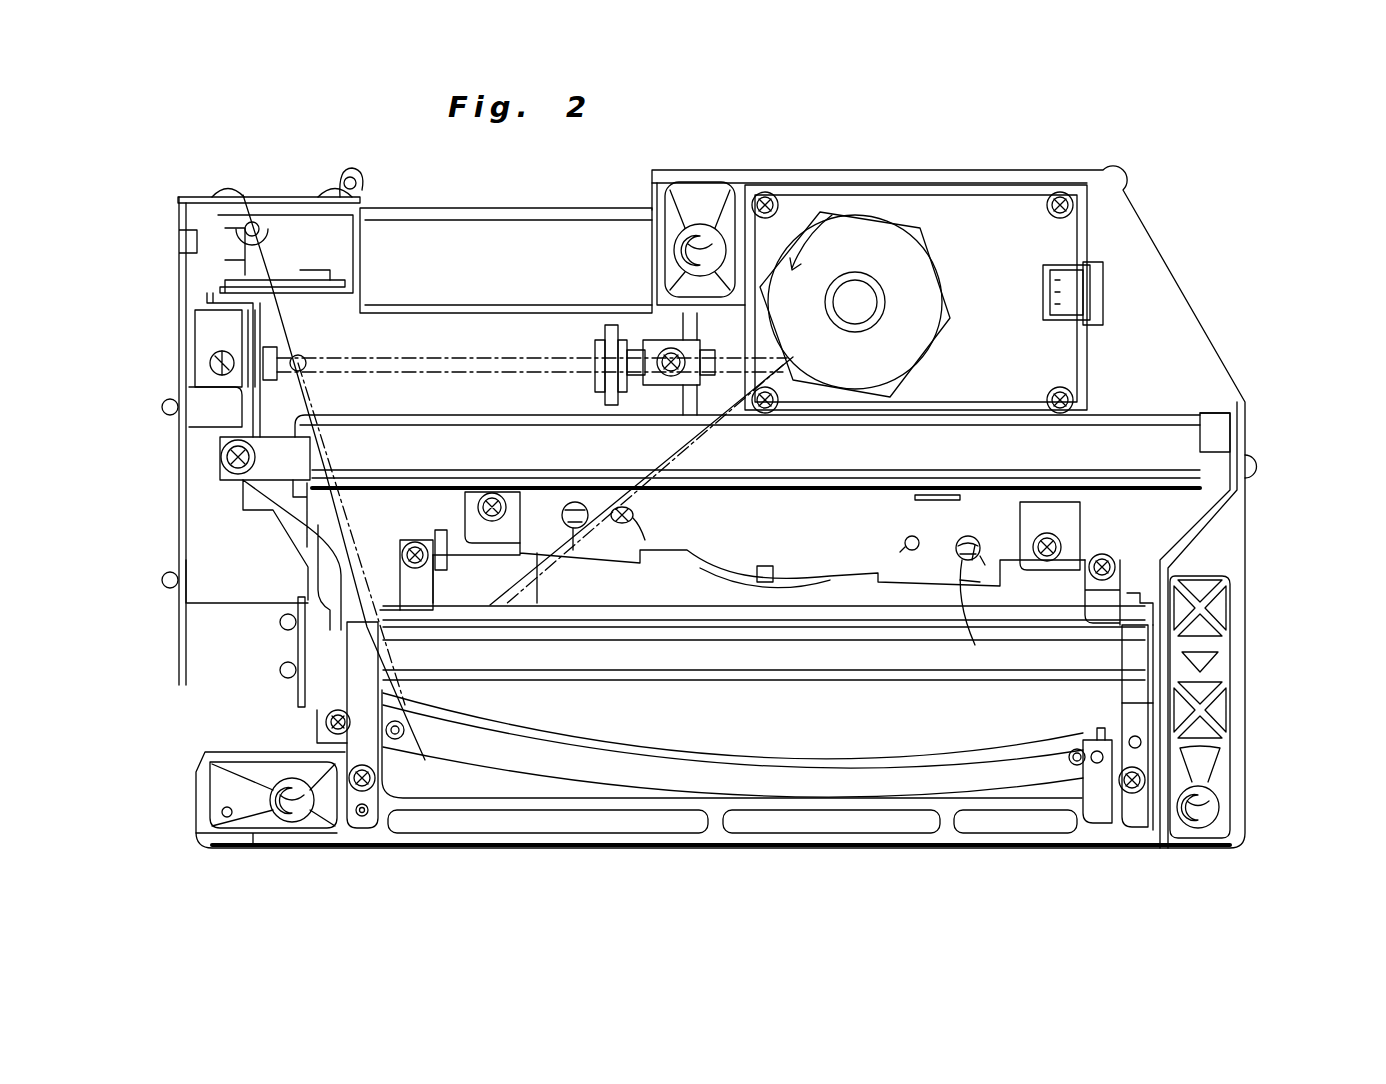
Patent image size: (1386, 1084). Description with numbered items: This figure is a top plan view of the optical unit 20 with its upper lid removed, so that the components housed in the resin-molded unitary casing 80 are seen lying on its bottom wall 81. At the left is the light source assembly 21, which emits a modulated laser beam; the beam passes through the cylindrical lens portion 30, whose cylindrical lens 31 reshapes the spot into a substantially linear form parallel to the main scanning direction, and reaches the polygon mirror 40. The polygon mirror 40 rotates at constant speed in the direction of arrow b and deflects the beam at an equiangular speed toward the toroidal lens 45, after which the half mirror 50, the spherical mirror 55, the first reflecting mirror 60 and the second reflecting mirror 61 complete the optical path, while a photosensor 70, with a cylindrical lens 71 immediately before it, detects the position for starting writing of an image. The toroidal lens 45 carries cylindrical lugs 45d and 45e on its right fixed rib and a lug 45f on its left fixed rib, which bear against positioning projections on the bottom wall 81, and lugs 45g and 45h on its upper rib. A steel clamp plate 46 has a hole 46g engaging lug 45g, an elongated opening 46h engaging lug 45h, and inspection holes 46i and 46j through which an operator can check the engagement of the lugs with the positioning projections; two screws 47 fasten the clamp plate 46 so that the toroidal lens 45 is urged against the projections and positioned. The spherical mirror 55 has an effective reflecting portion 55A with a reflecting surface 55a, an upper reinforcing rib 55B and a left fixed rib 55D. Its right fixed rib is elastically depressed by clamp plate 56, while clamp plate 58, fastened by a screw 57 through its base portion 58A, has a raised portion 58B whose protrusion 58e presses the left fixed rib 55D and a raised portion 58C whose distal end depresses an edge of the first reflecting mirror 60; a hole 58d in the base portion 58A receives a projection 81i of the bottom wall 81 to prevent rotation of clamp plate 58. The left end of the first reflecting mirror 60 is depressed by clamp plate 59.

The optical unit 20 is at (607, 850).
The light source assembly 21 is at (215, 352).
The cylindrical lens portion 30 is at (627, 320).
The cylindrical lens 31 is at (596, 345).
The polygon mirror 40 is at (827, 218).
The toroidal lens 45 is at (820, 580).
The cylindrical lug 45d is at (978, 540).
The cylindrical lug 45e is at (958, 545).
The cylindrical lug 45f is at (562, 520).
The cylindrical lug 45g is at (905, 540).
The cylindrical lug 45h is at (637, 512).
The clamp plate 46 is at (770, 515).
The hole 46g is at (905, 548).
The elongated opening 46h is at (637, 520).
The inspection hole 46i is at (996, 616).
The inspection hole 46j is at (575, 500).
The screw 47 is at (497, 490).
The half mirror 50 is at (725, 612).
The spherical mirror 55 is at (832, 752).
The reflecting surface 55a is at (603, 742).
The effective reflecting portion 55A is at (730, 760).
The upper reinforcing rib 55B is at (905, 778).
The left fixed rib 55D is at (1120, 738).
The clamp plate 56 is at (395, 745).
The screw 57 is at (330, 720).
The clamp plate 58 is at (1133, 812).
The base portion 58A is at (1150, 833).
The raised portion 58B is at (1093, 813).
The raised portion 58C is at (1133, 655).
The hole 58d is at (1141, 742).
The protrusion 58e is at (1095, 750).
The clamp plate 59 is at (355, 676).
The first reflecting mirror 60 is at (708, 660).
The second reflecting mirror 61 is at (930, 490).
The photosensor 70 is at (258, 195).
The cylindrical lens 71 is at (280, 275).
The unitary casing 80 is at (742, 850).
The bottom wall 81 is at (613, 590).
The projection 81i is at (1138, 752).